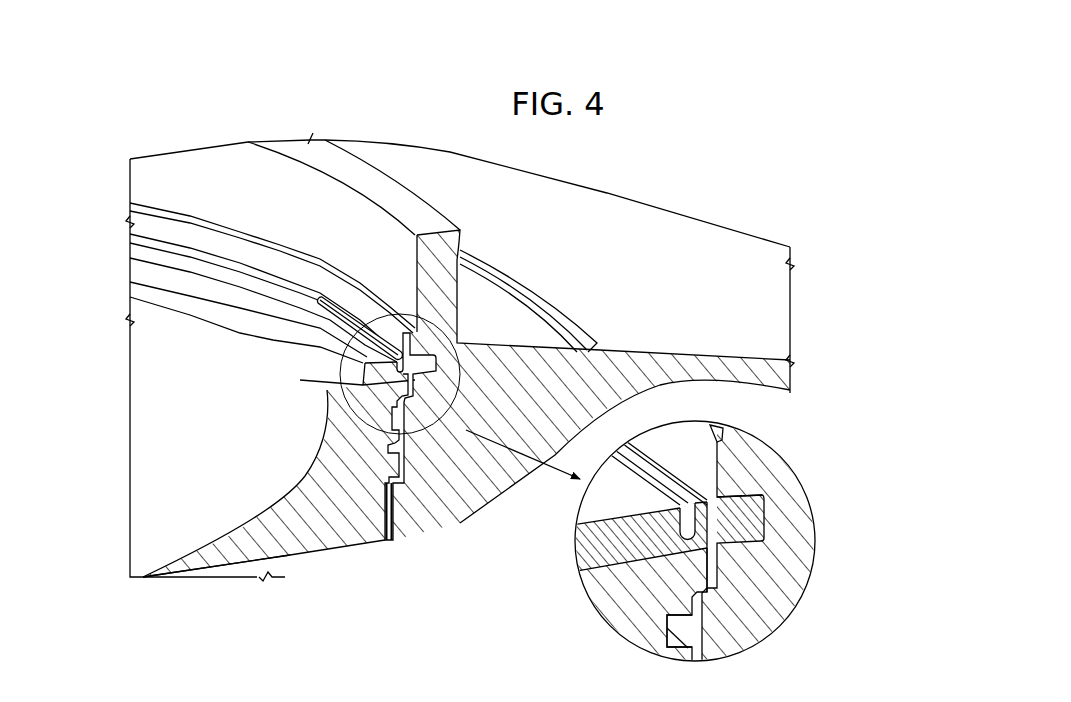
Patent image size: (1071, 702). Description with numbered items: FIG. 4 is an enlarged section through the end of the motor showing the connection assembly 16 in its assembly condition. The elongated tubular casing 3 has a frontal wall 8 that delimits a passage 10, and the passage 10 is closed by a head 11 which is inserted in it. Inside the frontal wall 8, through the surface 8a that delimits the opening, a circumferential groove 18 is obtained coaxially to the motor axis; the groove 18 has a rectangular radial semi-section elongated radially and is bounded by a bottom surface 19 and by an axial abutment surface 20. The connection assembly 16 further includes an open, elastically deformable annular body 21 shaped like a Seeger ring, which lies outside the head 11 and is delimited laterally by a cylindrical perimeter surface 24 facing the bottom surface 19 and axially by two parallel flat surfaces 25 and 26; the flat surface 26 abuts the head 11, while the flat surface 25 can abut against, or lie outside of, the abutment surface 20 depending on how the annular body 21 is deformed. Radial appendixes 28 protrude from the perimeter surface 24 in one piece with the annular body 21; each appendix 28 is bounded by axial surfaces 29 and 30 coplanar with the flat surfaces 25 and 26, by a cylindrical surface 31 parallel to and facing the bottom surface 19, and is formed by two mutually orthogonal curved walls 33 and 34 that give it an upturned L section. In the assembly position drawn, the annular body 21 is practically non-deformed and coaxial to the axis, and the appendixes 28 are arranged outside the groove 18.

The casing 3 is at (619, 181).
The frontal wall 8 is at (453, 482).
The surface 8a is at (471, 281).
The passage 10 is at (381, 511).
The head 11 is at (324, 533).
The connection assembly 16 is at (276, 337).
The circumferential groove 18 is at (722, 525).
The bottom surface 19 is at (733, 538).
The axial abutment surface 20 is at (743, 508).
The open circular annular body 21 is at (186, 304).
The cylindrical perimeter surface 24 is at (250, 266).
The flat surface 25 is at (372, 349).
The flat surface 26 is at (377, 399).
The radial appendix 28 is at (675, 633).
The axial surface 29 is at (698, 485).
The axial surface 30 is at (684, 568).
The cylindrical surface 31 is at (720, 548).
The curved wall 33 is at (695, 492).
The curved wall 34 is at (687, 572).